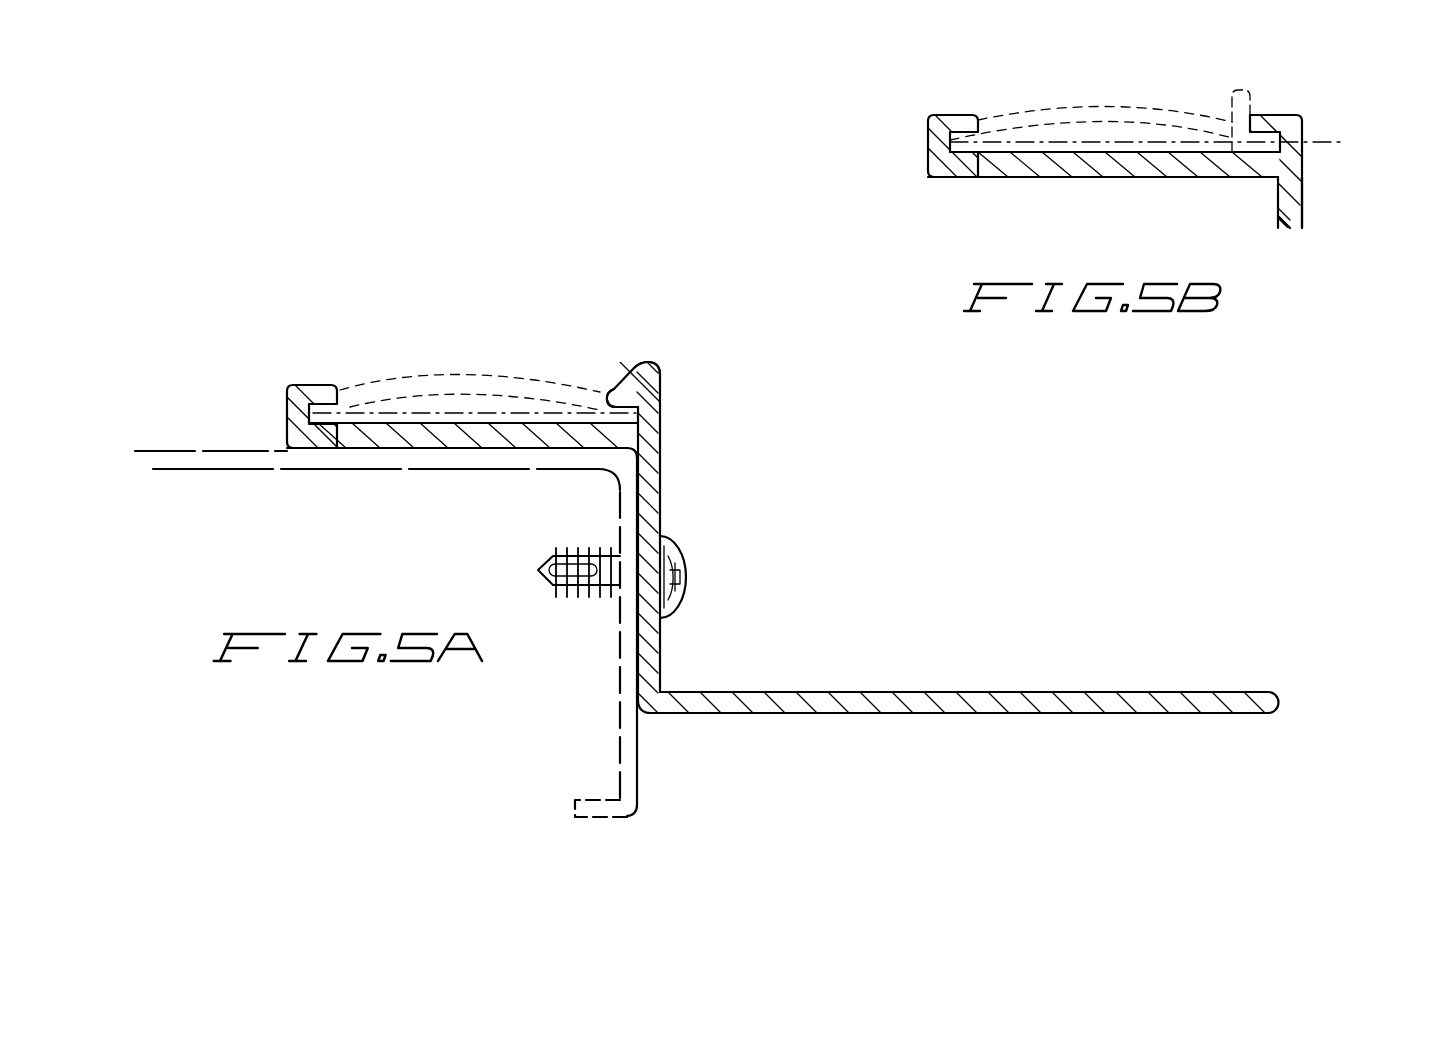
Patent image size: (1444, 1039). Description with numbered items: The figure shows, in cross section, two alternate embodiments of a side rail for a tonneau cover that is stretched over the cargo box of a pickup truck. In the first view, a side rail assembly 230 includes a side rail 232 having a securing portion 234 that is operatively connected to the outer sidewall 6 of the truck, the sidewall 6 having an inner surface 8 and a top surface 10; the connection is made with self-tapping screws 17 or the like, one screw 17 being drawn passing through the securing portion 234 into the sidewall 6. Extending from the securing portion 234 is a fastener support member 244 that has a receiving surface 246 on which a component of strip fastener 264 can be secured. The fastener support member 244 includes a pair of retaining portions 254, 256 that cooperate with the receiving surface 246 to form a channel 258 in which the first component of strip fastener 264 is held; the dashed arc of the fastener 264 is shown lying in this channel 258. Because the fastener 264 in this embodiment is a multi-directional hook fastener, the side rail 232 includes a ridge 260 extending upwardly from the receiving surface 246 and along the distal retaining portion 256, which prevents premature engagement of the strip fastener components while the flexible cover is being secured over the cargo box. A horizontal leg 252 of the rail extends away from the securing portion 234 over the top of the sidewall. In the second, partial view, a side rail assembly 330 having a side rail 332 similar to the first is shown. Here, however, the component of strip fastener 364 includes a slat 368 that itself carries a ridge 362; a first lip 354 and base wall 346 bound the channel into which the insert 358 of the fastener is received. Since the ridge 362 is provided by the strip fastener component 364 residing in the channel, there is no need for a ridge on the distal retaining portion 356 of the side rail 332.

In FIG. 5A, the top surface 10 is at (433, 604).
In FIG. 5A, the sidewall 6 is at (618, 727).
In FIG. 5A, the inner surface 8 is at (638, 768).
In FIG. 5A, the fastener support member 244 is at (399, 401).
In FIG. 5A, the retaining portion 254 is at (315, 385).
In FIG. 5A, the receiving surface 246 is at (403, 414).
In FIG. 5A, the channel 258 is at (512, 417).
In FIG. 5A, the component of strip fastener 264 is at (446, 372).
In FIG. 5A, the side rail assembly 230 is at (913, 510).
In FIG. 5A, the securing portion 234 is at (660, 482).
In FIG. 5A, the ridge 260 is at (640, 365).
In FIG. 5A, the distal retaining portion 256 is at (610, 387).
In FIG. 5A, the side rail 232 is at (668, 520).
In FIG. 5A, the horizontal leg 252 is at (968, 692).
In FIG. 5A, the self-tapping screw 17 is at (683, 583).
In FIG. 5B, the side rail assembly 330 is at (1107, 150).
In FIG. 5B, the first lip 354 is at (943, 115).
In FIG. 5B, the base wall 346 is at (1030, 147).
In FIG. 5B, the distal retaining portion 356 is at (1280, 115).
In FIG. 5B, the side rail 332 is at (1312, 203).
In FIG. 5B, the ridge 362 is at (1241, 90).
In FIG. 5B, the component of strip fastener 364 is at (1120, 104).
In FIG. 5B, the slat 368 is at (1345, 143).
In FIG. 5B, the insert panel 358 is at (1163, 143).